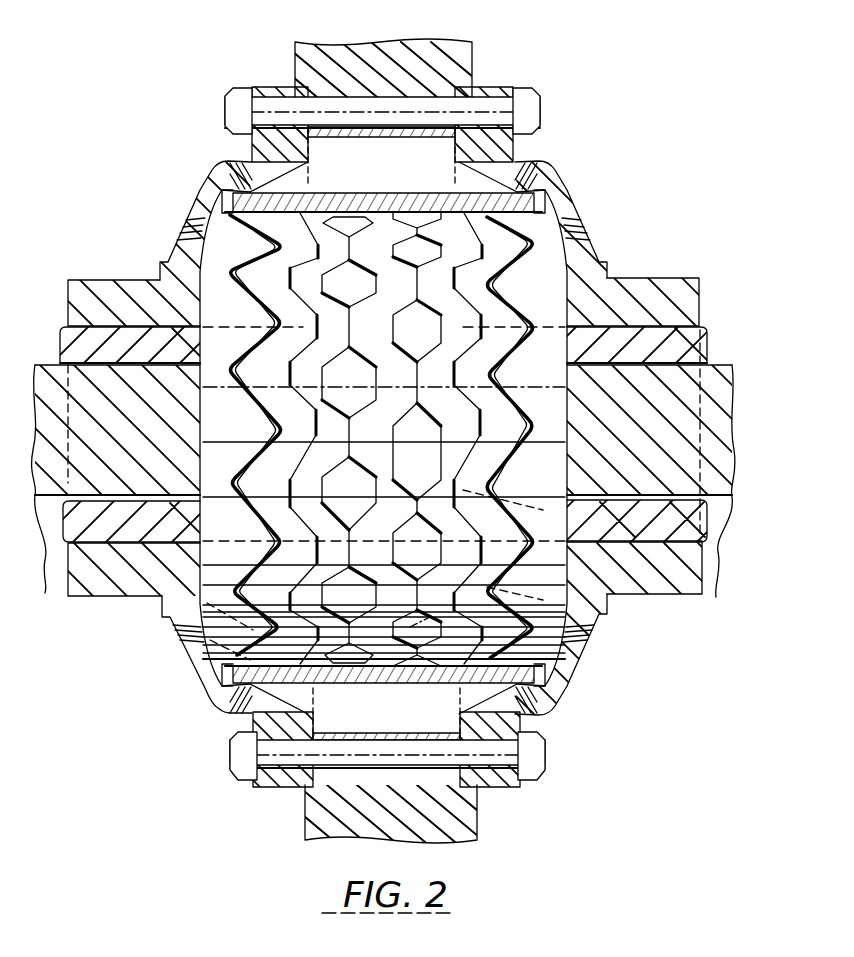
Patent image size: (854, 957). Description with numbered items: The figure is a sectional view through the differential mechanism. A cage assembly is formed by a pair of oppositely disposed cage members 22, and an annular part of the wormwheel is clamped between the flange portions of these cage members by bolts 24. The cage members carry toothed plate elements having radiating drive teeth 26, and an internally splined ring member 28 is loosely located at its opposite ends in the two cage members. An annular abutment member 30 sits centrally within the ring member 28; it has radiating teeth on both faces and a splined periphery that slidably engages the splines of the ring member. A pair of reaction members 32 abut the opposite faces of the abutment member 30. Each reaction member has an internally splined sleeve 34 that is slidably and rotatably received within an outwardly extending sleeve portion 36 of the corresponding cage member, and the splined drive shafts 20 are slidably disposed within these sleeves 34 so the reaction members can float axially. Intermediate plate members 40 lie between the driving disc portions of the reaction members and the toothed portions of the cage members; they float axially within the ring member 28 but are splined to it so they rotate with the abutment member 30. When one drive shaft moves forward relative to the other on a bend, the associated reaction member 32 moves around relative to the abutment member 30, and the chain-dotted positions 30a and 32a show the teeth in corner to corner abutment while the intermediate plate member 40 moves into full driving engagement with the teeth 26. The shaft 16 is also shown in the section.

The input shaft 16 is at (462, 53).
The splined drive shaft 20 is at (421, 479).
The cage member 22 is at (195, 208).
The bolt 24 is at (528, 98).
The radiating drive teeth 26 is at (255, 348).
The internally splined ring member 28 is at (475, 178).
The annular abutment member 30 is at (377, 245).
The reaction member 32 is at (327, 245).
The abutment member in displaced position 30a is at (425, 607).
The reaction member in displaced position 32a is at (432, 585).
The internally splined sleeve 34 is at (68, 345).
The sleeve portion 36 is at (120, 280).
The intermediate plate member 40 is at (283, 647).